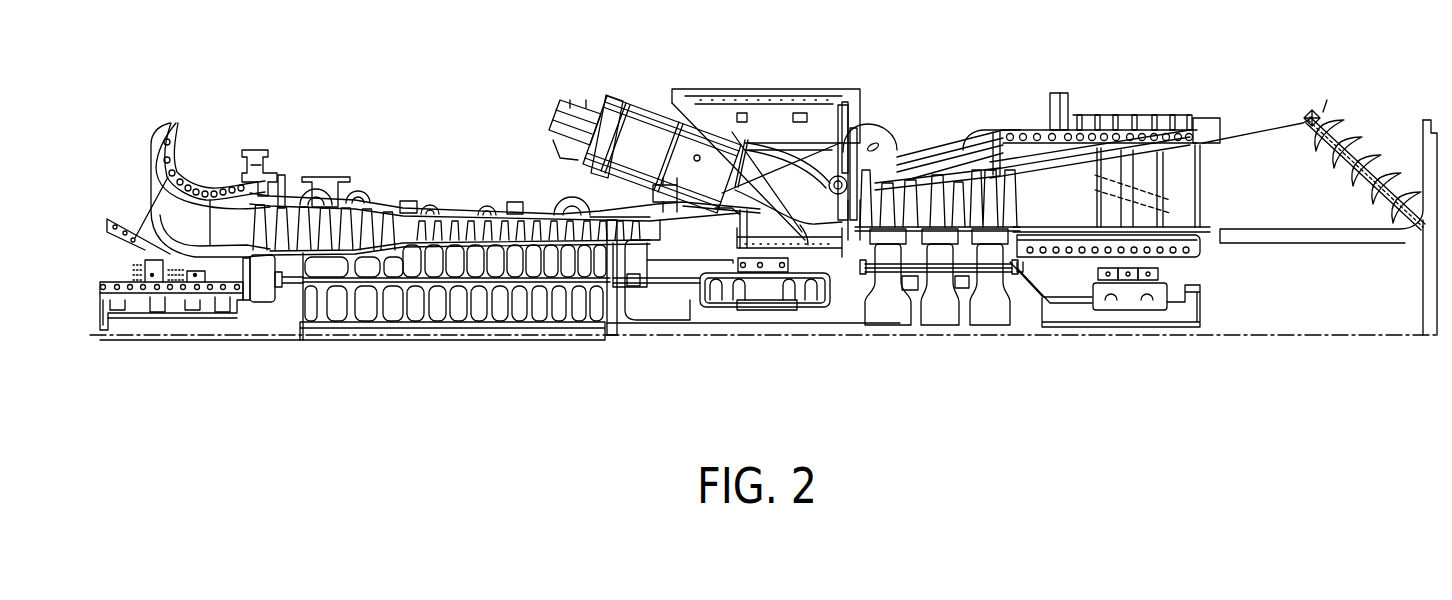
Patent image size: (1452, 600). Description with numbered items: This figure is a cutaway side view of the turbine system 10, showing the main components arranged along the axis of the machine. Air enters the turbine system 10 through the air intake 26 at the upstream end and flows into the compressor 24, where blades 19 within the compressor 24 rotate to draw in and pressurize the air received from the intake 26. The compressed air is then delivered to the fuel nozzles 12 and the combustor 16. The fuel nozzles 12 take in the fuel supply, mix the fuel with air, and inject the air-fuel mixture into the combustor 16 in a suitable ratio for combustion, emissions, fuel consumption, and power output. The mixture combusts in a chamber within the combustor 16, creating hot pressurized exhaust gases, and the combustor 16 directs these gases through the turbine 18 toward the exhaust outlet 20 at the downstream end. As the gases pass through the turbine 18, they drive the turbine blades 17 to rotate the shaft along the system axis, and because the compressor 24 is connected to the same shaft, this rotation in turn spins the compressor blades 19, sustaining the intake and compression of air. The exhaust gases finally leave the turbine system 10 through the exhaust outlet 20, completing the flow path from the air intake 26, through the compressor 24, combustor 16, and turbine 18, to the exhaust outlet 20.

The turbine system 10 is at (788, 360).
The fuel nozzles 12 is at (607, 120).
The combustor 16 is at (820, 118).
The turbine blades 17 is at (922, 182).
The turbine 18 is at (1208, 84).
The compressor blades 19 is at (324, 167).
The exhaust outlet 20 is at (1353, 137).
The compressor 24 is at (501, 212).
The air intake 26 is at (167, 225).